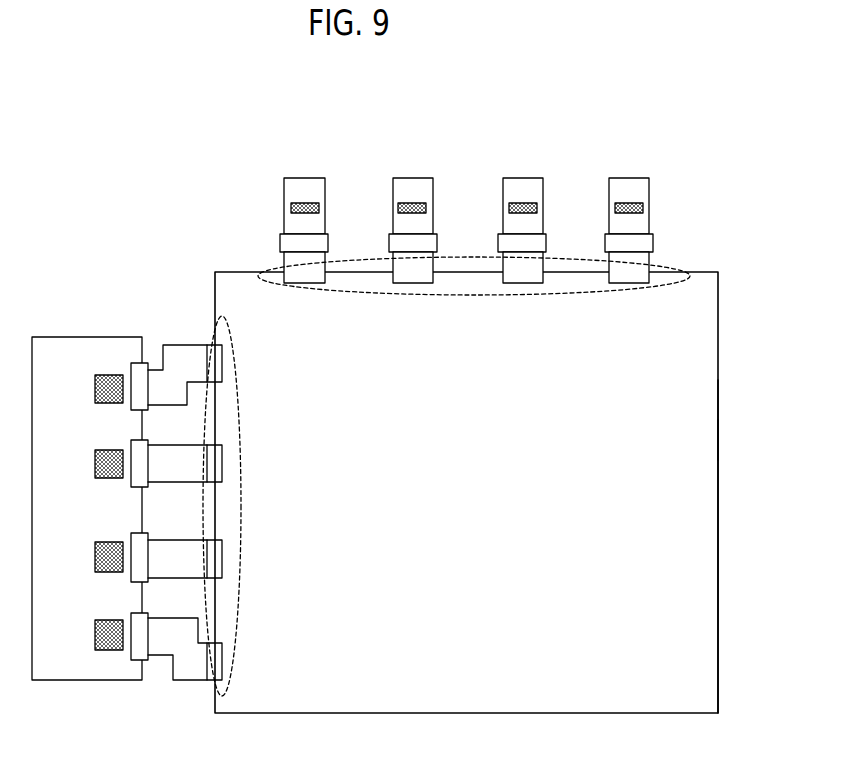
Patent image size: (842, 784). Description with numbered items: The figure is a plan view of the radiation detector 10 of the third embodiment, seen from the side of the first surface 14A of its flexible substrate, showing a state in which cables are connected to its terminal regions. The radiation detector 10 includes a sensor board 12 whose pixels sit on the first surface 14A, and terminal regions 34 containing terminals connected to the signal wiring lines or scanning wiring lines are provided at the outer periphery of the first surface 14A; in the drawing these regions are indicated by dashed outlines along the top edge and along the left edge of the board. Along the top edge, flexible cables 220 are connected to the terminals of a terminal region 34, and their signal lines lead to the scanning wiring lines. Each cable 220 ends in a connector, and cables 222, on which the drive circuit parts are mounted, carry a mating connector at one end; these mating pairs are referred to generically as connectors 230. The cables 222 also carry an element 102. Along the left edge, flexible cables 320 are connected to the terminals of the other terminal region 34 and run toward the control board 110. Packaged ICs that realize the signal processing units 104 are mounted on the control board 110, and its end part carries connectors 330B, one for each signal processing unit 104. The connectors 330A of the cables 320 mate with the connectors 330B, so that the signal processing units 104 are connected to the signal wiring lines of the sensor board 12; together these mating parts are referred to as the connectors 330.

The radiation detector 10 is at (693, 653).
The sensor board 12 is at (697, 559).
The first surface 14A is at (696, 430).
The terminal region 34 is at (692, 276).
The terminal 102 is at (643, 206).
The cable 222 is at (648, 222).
The flexible cable 220 is at (640, 266).
The connector 230 is at (284, 247).
The control board 110 is at (87, 343).
The signal processing unit 104 is at (108, 375).
The flexible cable 320 is at (207, 360).
The connector 330 is at (141, 555).
The connector 330A is at (133, 658).
The connector 330B is at (137, 728).